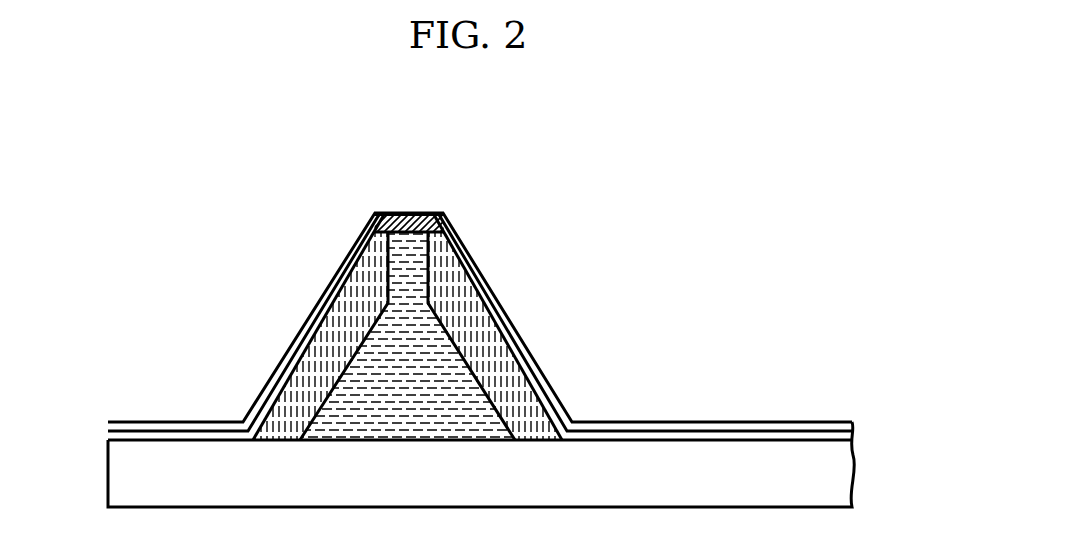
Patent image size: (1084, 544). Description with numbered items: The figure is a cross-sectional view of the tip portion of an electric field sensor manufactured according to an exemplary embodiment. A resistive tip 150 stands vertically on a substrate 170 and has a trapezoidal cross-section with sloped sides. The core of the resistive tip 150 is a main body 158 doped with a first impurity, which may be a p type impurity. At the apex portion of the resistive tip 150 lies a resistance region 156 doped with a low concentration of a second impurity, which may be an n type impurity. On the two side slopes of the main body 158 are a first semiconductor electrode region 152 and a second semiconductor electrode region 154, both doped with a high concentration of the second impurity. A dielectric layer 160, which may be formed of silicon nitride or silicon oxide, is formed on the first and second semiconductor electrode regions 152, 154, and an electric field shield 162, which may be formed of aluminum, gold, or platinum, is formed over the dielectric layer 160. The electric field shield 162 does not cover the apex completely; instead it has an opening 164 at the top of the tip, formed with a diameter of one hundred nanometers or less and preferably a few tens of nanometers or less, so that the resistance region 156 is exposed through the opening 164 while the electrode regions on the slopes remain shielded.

The resistive tip 150 is at (266, 283).
The first semiconductor electrode region 152 is at (362, 296).
The second semiconductor electrode region 154 is at (450, 278).
The resistance region 156 is at (405, 213).
The main body 158 is at (432, 403).
The dielectric layer 160 is at (505, 312).
The electric field shield 162 is at (538, 377).
The opening 164 is at (415, 213).
The substrate 170 is at (743, 458).